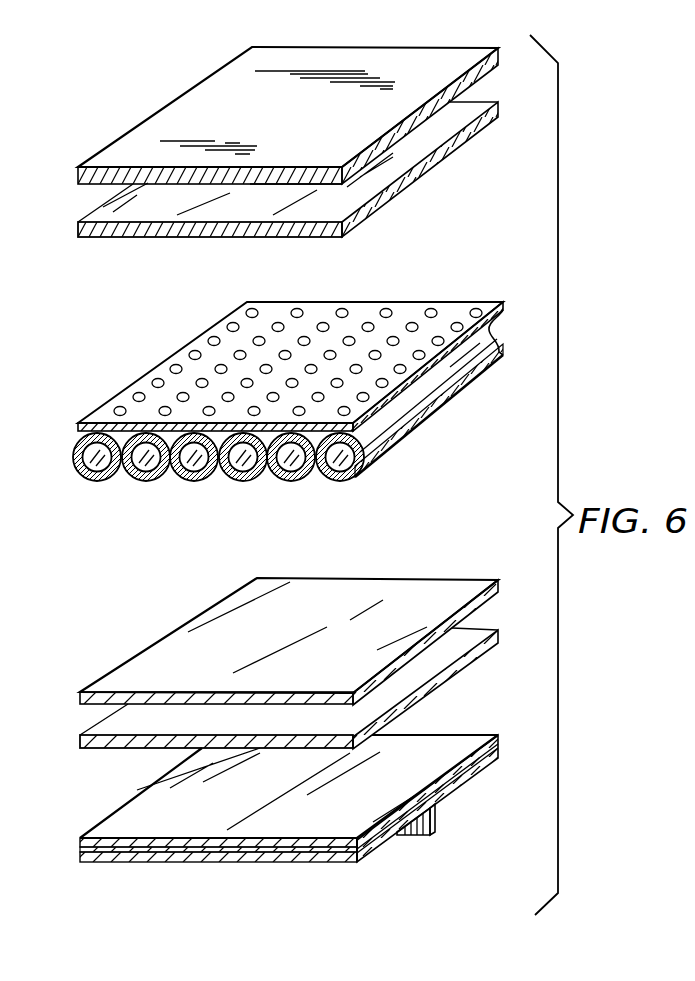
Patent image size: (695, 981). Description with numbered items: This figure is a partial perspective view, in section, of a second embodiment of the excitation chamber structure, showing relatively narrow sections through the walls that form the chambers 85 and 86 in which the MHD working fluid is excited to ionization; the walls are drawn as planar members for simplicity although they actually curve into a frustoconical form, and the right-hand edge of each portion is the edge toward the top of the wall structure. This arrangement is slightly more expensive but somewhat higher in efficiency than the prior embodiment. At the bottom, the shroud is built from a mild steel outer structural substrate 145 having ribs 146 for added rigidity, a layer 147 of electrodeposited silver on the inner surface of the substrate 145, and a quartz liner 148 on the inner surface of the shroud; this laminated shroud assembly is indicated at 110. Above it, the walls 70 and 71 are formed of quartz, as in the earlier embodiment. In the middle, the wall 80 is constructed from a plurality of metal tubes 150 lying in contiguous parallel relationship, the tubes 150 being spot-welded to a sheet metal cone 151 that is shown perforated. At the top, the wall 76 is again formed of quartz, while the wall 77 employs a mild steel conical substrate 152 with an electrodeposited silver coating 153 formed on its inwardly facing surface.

The mild steel conical substrate 152 is at (357, 121).
The electrodeposited silver coating 153 is at (293, 184).
The wall 77 is at (301, 207).
The wall 76 is at (338, 230).
The chamber 86 is at (300, 161).
The sheet metal cone 151 is at (302, 378).
The metal tubes 150 is at (333, 482).
The wall 80 is at (416, 440).
The chamber 85 is at (299, 417).
The wall 71 is at (347, 683).
The wall 70 is at (332, 731).
The quartz liner 148 is at (347, 826).
The layer of electrodeposited silver 147 is at (343, 853).
The outer structural substrate 145 is at (358, 862).
The ribs 146 is at (425, 838).
The base subassembly 110 is at (289, 748).